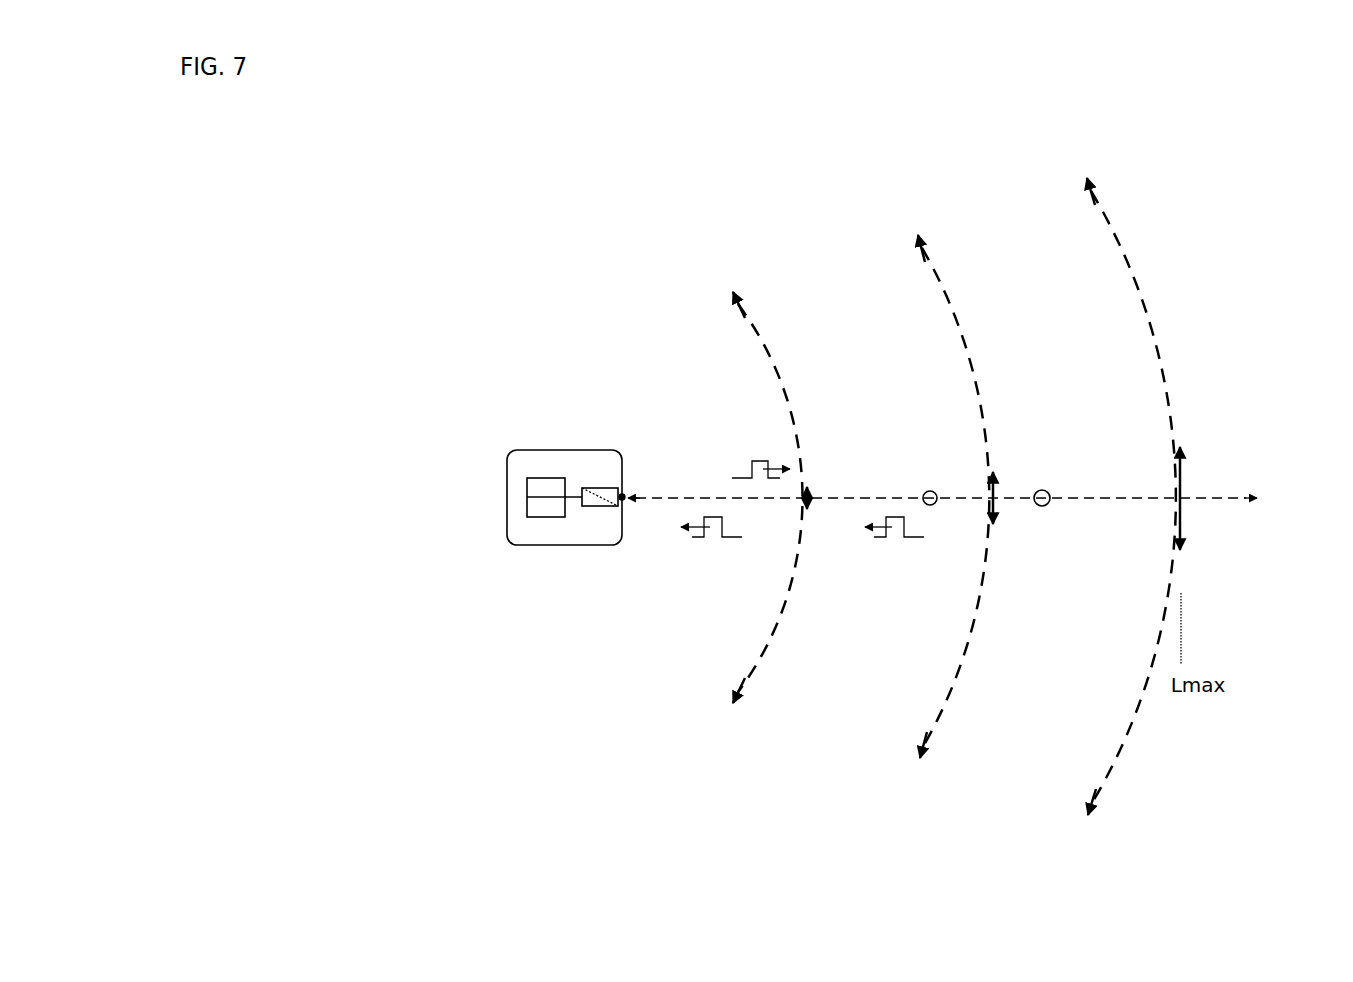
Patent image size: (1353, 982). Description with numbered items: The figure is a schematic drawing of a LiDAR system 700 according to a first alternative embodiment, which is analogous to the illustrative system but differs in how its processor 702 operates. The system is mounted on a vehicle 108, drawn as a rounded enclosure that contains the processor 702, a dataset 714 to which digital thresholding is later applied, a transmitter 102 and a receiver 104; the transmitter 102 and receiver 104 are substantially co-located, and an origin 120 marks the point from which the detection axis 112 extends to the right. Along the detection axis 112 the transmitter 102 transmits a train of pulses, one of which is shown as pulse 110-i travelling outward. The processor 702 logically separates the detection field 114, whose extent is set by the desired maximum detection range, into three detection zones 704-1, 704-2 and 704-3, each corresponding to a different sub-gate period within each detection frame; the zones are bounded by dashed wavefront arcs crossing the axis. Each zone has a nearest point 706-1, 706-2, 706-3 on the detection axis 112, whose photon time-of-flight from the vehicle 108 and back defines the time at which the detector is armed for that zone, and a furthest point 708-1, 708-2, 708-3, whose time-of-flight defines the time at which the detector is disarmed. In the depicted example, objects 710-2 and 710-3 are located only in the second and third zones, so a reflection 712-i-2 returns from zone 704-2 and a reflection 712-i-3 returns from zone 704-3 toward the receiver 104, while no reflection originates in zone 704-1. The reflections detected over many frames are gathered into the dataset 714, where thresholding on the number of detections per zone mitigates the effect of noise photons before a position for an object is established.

The LiDAR system 700 is at (400, 365).
The vehicle 108 is at (507, 497).
The dataset 714 is at (527, 484).
The processor 702 is at (527, 506).
The transmitter 102 is at (618, 494).
The receiver 104 is at (602, 507).
The origin 120 is at (624, 495).
The detection axis 112 is at (1217, 502).
The pulse 110-i is at (770, 438).
The reflection 712-i-2 is at (712, 551).
The reflection 712-i-3 is at (897, 551).
The detection field 114 is at (921, 200).
The detection zone 704-1 is at (668, 437).
The detection zone 704-2 is at (845, 437).
The detection zone 704-3 is at (1080, 437).
The point 706-1 is at (633, 512).
The point 706-2 is at (820, 510).
The point 706-3 is at (1007, 510).
The point 708-1 is at (797, 510).
The point 708-2 is at (985, 507).
The point 708-3 is at (1172, 508).
The target 710-2 is at (930, 491).
The target 710-3 is at (1042, 490).